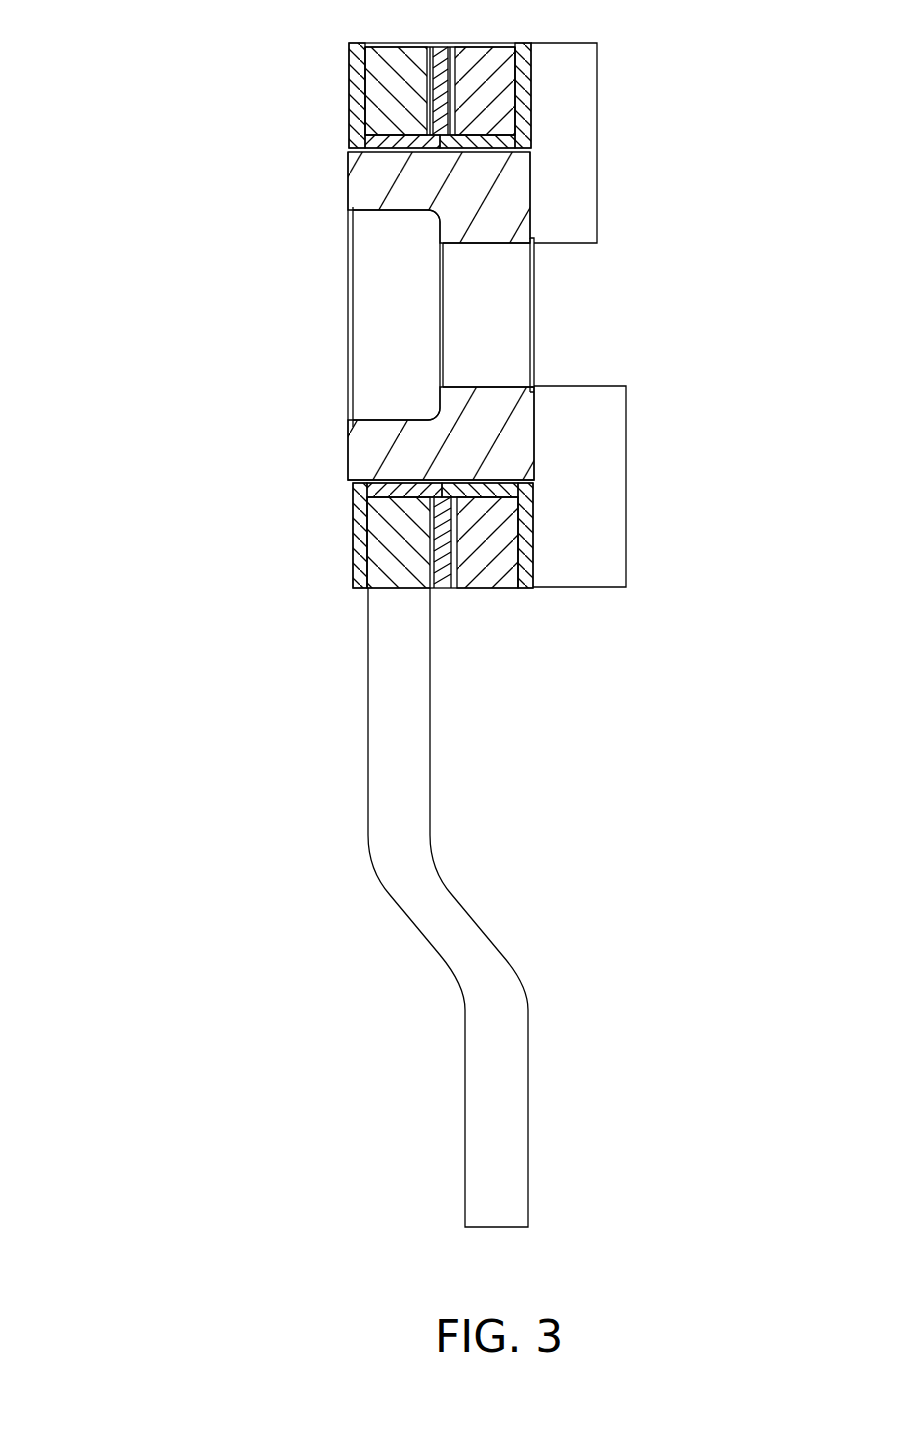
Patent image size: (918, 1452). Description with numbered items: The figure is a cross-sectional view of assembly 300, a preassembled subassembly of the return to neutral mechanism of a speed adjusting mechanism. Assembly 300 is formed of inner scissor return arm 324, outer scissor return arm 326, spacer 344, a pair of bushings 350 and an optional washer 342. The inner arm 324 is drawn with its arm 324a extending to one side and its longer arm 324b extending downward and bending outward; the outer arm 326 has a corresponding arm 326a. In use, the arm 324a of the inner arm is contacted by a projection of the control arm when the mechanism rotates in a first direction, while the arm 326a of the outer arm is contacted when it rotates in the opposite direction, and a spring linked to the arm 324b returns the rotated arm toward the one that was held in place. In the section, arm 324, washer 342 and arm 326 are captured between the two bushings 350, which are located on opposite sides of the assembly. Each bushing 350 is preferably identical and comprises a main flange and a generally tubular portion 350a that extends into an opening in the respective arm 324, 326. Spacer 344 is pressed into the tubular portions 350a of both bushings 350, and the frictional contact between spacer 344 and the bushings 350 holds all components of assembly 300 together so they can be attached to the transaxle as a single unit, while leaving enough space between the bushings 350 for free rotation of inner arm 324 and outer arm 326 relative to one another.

The assembly 300 is at (168, 100).
The inner scissor return arm 324 is at (401, 46).
The arm of inner scissor return arm 324a is at (597, 144).
The arm of inner scissor return arm 324b is at (528, 1120).
The outer scissor return arm 326 is at (482, 590).
The arm of outer scissor return arm 326a is at (626, 488).
The washer 342 is at (441, 47).
The spacer 344 is at (367, 443).
The bushing 350 is at (524, 47).
The tubular portion 350a is at (490, 145).